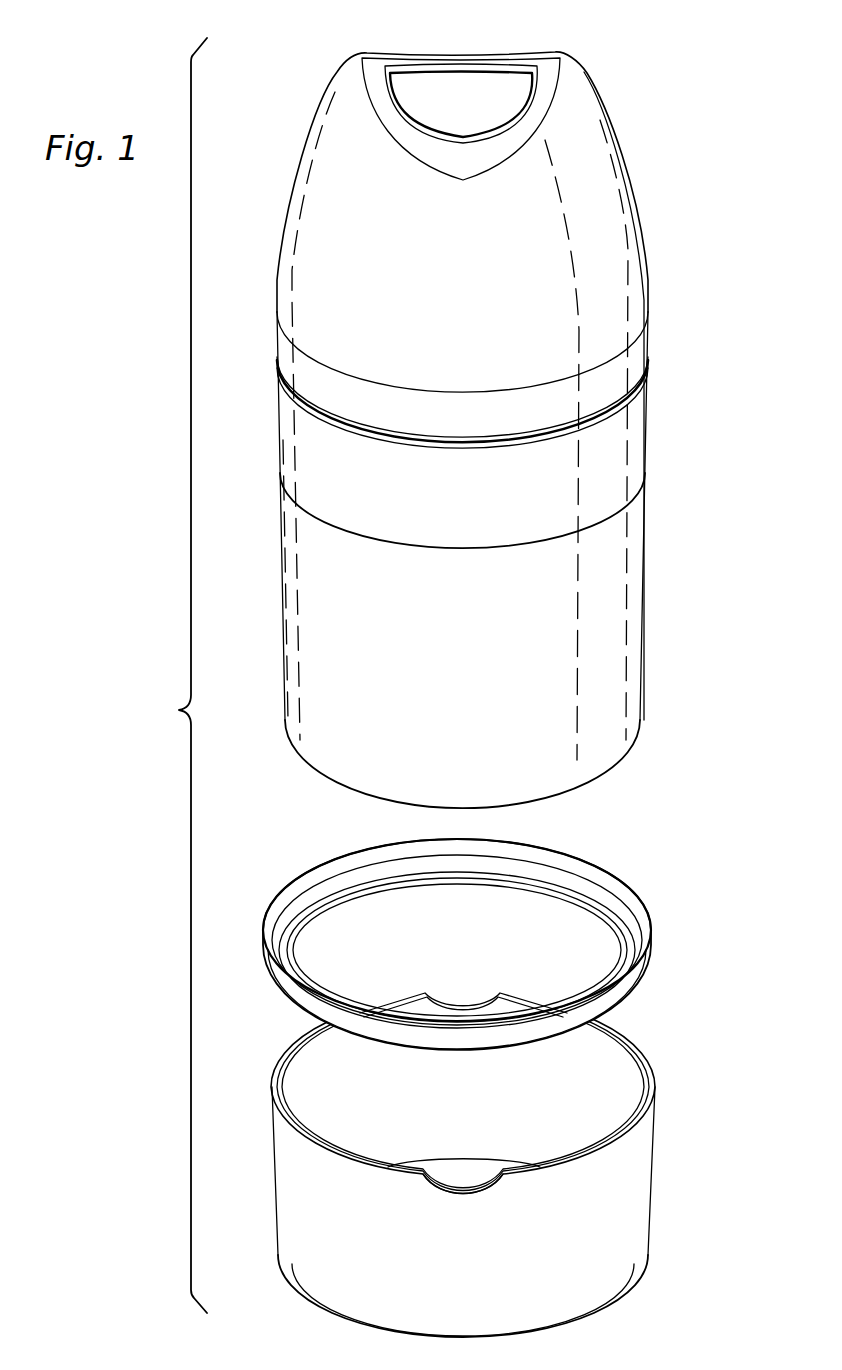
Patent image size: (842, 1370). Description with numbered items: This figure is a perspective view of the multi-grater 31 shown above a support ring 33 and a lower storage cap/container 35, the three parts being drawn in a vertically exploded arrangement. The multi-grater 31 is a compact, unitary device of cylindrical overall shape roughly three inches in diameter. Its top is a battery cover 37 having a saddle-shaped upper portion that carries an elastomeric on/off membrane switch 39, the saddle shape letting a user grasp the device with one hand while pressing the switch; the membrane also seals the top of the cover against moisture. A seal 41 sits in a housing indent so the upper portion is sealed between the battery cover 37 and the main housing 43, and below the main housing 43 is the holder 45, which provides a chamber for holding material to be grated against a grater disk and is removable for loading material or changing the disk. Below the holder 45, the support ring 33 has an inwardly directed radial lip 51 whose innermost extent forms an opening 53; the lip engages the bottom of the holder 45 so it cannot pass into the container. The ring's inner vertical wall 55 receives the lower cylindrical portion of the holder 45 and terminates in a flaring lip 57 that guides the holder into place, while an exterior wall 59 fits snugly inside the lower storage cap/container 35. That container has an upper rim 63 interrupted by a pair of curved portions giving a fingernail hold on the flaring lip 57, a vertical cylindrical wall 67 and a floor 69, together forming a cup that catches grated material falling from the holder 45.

The multi-grater 31 is at (520, 407).
The support ring 33 is at (504, 930).
The lower storage cap/container 35 is at (483, 1166).
The battery cover 37 is at (632, 188).
The on/off membrane switch 39 is at (434, 73).
The seal 41 is at (648, 363).
The main housing 43 is at (648, 415).
The holder 45 is at (648, 575).
The inwardly directed radial lip 51 is at (620, 947).
The opening 53 is at (575, 925).
The vertical wall 55 is at (615, 908).
The flaring lip 57 is at (567, 855).
The exterior wall 59 is at (623, 987).
The upper rim 63 is at (658, 1078).
The vertical cylindrical wall 67 is at (283, 1205).
The floor 69 is at (452, 1167).